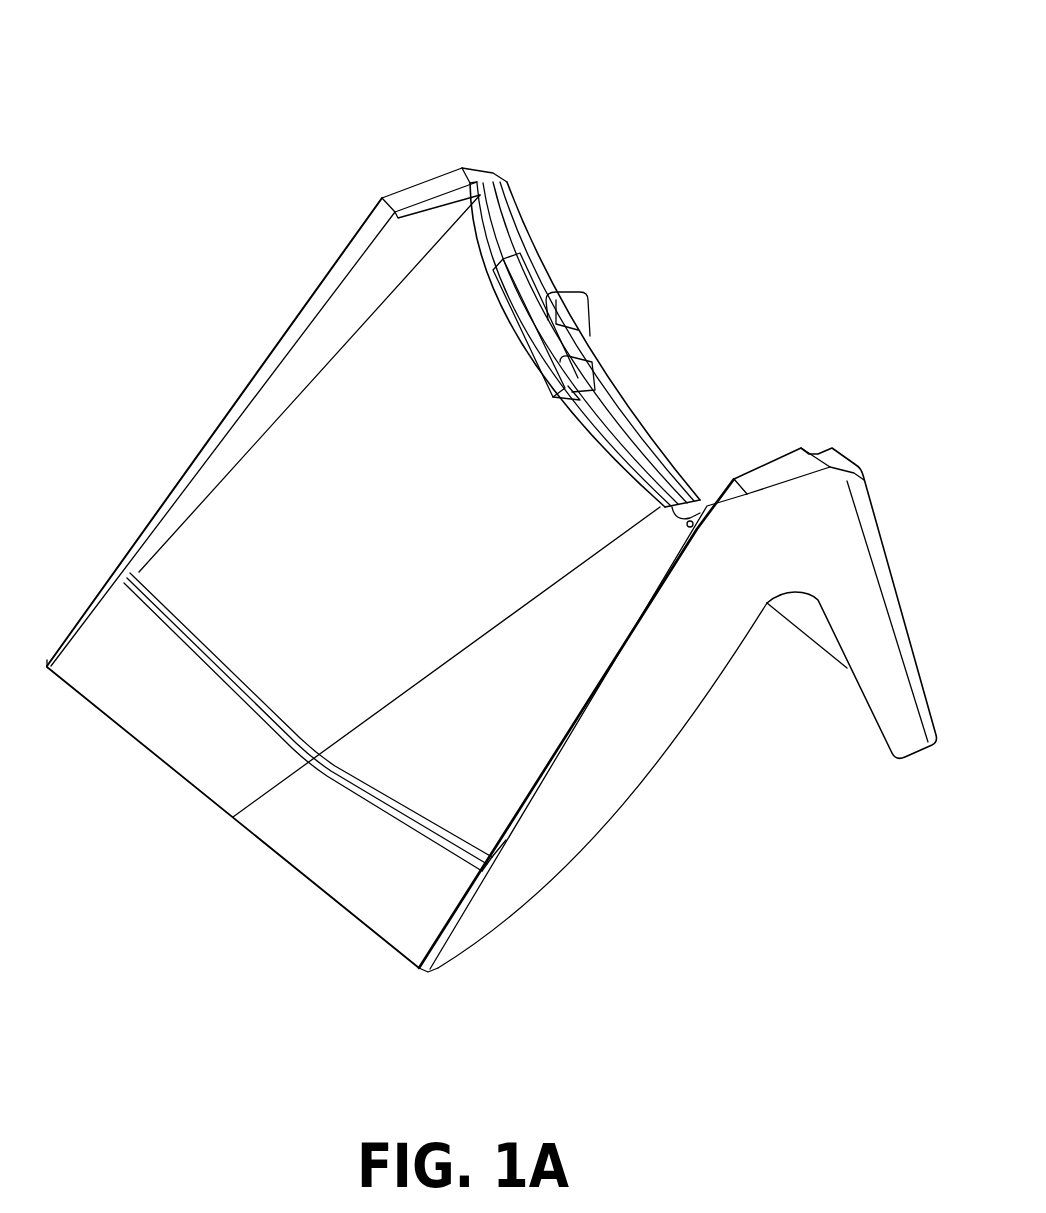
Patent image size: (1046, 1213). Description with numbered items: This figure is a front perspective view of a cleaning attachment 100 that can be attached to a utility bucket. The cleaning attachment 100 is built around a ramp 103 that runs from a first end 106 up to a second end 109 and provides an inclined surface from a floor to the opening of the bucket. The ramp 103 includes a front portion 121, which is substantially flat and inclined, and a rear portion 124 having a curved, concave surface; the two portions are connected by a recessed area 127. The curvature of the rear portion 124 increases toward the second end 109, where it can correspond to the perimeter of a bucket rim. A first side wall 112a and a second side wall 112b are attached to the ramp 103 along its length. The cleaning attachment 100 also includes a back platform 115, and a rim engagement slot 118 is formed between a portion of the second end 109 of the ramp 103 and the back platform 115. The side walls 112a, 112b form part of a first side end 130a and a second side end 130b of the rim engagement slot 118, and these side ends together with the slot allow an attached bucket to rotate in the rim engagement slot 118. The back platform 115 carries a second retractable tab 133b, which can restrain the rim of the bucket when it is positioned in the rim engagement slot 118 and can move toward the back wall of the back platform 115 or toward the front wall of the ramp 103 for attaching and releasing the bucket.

The cleaning attachment 100 is at (556, 90).
The ramp 103 is at (585, 691).
The first end 106 is at (203, 866).
The second end 109 is at (680, 539).
The first side wall 112a is at (862, 552).
The second side wall 112b is at (362, 232).
The back platform 115 is at (629, 386).
The rim engagement slot 118 is at (520, 259).
The front portion 121 is at (368, 903).
The rear portion 124 is at (525, 761).
The recessed area 127 is at (400, 826).
The first side end 130a is at (840, 444).
The second side end 130b is at (462, 172).
The second retractable tab 133b is at (579, 325).